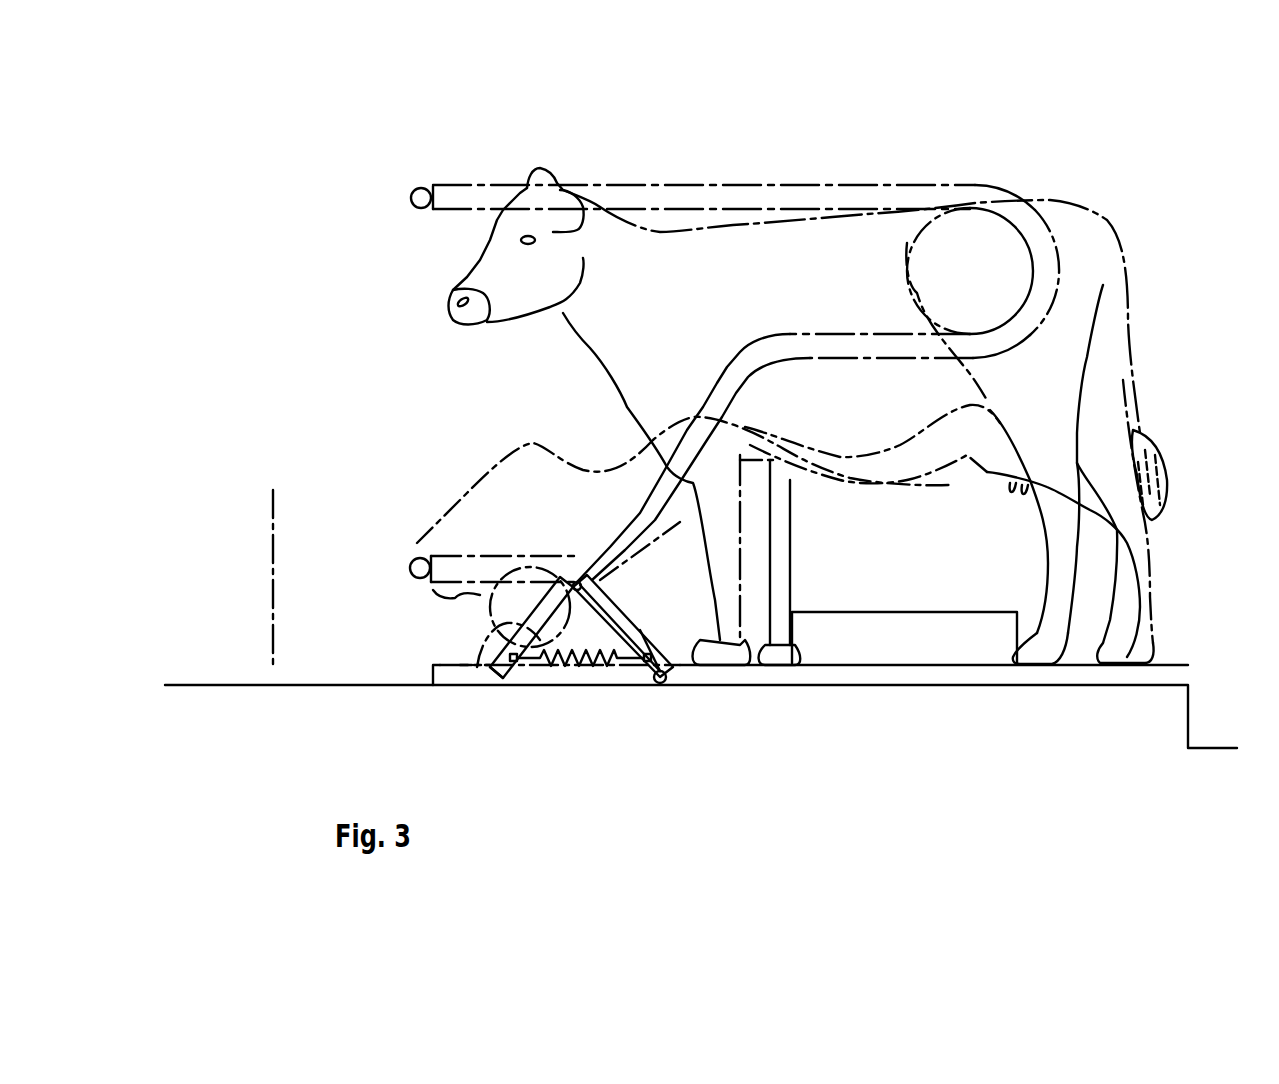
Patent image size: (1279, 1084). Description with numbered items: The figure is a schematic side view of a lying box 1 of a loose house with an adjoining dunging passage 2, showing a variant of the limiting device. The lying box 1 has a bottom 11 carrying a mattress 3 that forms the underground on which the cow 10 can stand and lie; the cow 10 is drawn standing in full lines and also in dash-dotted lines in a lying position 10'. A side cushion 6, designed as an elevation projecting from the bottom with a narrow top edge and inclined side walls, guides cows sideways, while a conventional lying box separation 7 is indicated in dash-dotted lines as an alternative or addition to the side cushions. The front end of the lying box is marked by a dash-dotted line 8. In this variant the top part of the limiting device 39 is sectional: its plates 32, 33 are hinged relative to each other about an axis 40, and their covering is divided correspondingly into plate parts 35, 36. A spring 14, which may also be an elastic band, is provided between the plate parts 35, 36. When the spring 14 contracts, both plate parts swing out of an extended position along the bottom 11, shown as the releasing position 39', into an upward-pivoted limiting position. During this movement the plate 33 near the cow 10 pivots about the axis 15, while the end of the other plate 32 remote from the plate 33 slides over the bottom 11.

The lying box 1 is at (327, 210).
The dunging passage 2 is at (1232, 632).
The mattress 3 is at (832, 676).
The side cushion 6 is at (885, 628).
The lying box separation 7 is at (757, 185).
The front end 8 is at (273, 509).
The cow 10 is at (877, 369).
The cow in lying position 10' is at (493, 531).
The bottom 11 is at (937, 684).
The spring 14 is at (553, 660).
The axis 15 is at (660, 684).
The plate 32 is at (503, 685).
The plate 33 is at (627, 640).
The plate part 35 is at (630, 630).
The plate part 36 is at (538, 616).
The limiting device 39 is at (636, 619).
The limiting device in releasing position 39' is at (429, 650).
The axis 40 is at (575, 582).